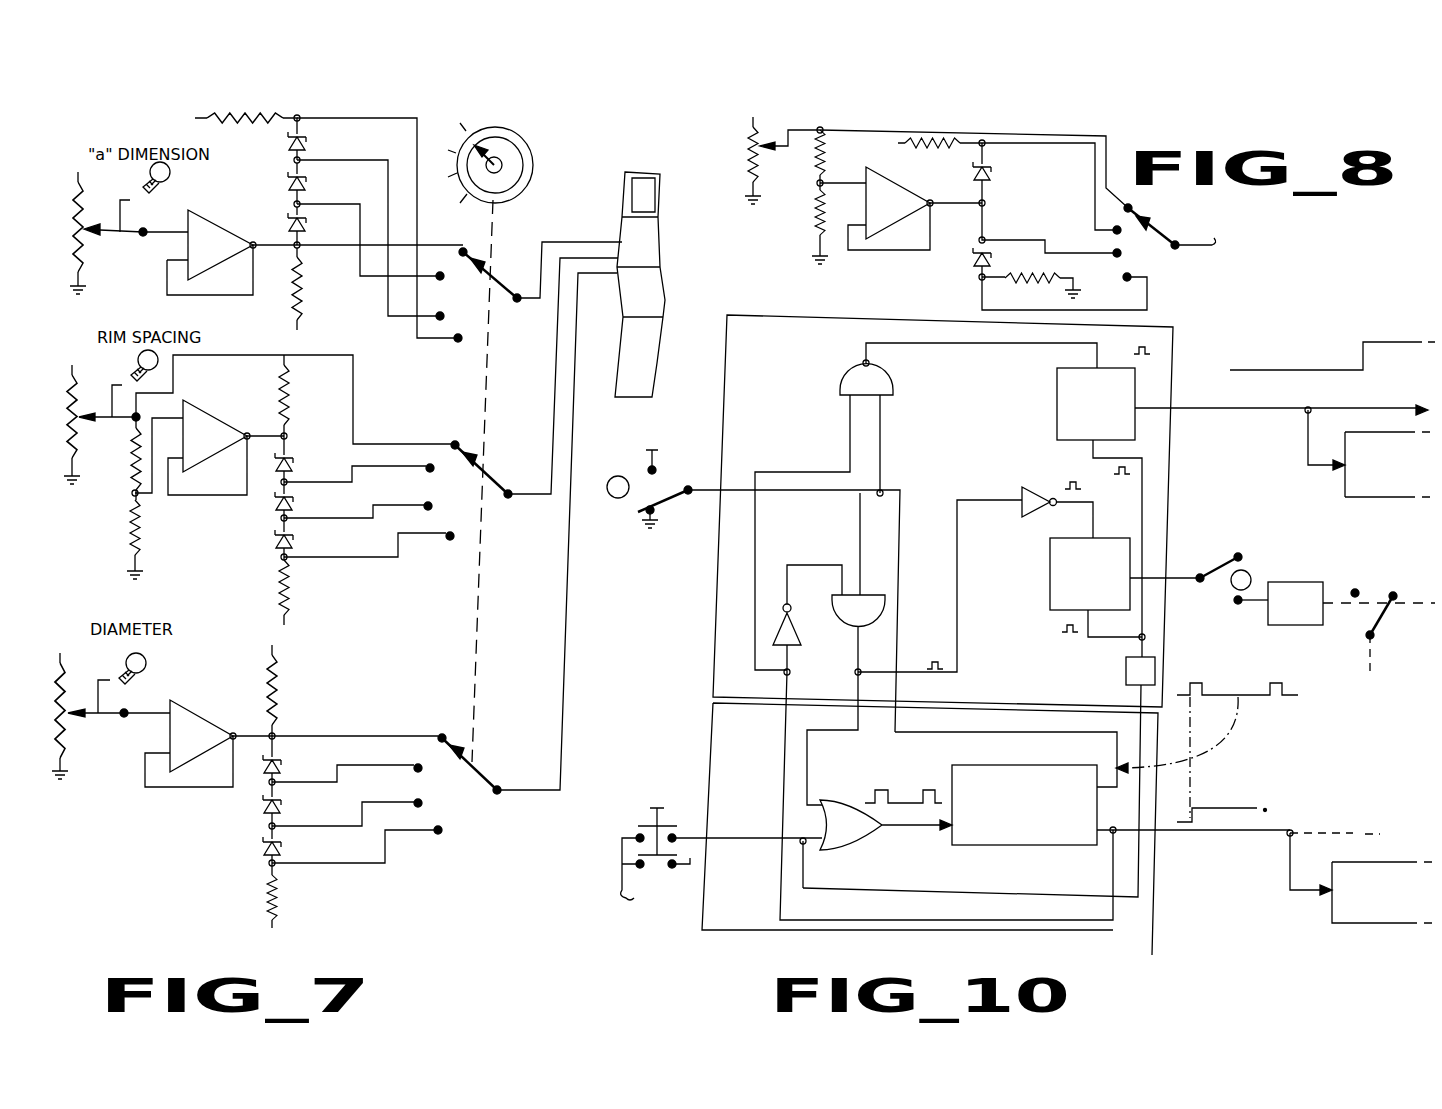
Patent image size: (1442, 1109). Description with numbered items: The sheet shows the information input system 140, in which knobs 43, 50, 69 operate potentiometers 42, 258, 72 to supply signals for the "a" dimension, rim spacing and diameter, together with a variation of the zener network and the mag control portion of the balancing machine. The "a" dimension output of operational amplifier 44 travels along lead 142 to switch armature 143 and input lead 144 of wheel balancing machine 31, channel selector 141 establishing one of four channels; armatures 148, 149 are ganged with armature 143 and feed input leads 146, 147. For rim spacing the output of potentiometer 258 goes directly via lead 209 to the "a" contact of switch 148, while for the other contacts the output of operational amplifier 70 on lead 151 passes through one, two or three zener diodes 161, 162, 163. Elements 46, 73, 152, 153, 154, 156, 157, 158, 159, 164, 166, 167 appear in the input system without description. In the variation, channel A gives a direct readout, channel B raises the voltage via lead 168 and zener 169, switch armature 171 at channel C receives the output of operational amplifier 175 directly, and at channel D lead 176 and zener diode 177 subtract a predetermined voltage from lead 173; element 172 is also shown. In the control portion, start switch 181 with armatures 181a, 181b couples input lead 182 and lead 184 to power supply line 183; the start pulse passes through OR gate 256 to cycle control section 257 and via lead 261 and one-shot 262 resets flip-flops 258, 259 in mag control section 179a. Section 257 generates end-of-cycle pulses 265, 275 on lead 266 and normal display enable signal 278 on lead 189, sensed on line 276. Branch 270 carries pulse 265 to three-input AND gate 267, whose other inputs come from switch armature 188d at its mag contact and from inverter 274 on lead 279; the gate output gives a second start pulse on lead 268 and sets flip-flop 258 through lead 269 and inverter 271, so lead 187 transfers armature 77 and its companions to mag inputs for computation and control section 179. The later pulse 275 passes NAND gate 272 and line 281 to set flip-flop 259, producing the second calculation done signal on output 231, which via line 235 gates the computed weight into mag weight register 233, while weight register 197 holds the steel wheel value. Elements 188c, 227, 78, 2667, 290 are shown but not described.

In FIG. 7, the potentiometer 42 is at (94, 252).
In FIG. 7, the knob 43 is at (171, 174).
In FIG. 7, the operational amplifier 44 is at (215, 230).
In FIG. 7, the amplifier output line 46 is at (256, 245).
In FIG. 7, the knob 50 is at (160, 363).
In FIG. 7, the operational amplifier 70 is at (212, 428).
In FIG. 7, the first flip-flop 258 is at (66, 453).
In FIG. 10, the first flip-flop 258 is at (1050, 580).
In FIG. 7, the lead 209 is at (353, 378).
In FIG. 7, the knob 69 is at (148, 661).
In FIG. 7, the operational amplifier 73 is at (200, 726).
In FIG. 7, the potentiometer 72 is at (42, 792).
In FIG. 7, the information input system 140 is at (135, 832).
In FIG. 7, the channel selector 141 is at (540, 163).
In FIG. 7, the lead 142 is at (323, 252).
In FIG. 7, the switch armature 143 is at (497, 278).
In FIG. 7, the input lead 144 is at (585, 241).
In FIG. 7, the input lead 146 is at (554, 382).
In FIG. 7, the input lead 147 is at (564, 690).
In FIG. 7, the switch armature 148 is at (486, 477).
In FIG. 7, the switch armature 149 is at (482, 770).
In FIG. 7, the lead 151 is at (288, 434).
In FIG. 7, the resistor 152 is at (280, 735).
In FIG. 7, the connecting lines 153 is at (413, 325).
In FIG. 7, the connecting lines 154 is at (398, 560).
In FIG. 7, the connecting lines 156 is at (322, 866).
In FIG. 7, the zener diode 157 is at (308, 225).
In FIG. 7, the zener diode 158 is at (308, 184).
In FIG. 7, the zener diode 159 is at (308, 142).
In FIG. 7, the zener diode 161 is at (292, 463).
In FIG. 7, the zener diode 162 is at (293, 502).
In FIG. 7, the zener diode 163 is at (294, 540).
In FIG. 7, the zener diode 164 is at (283, 766).
In FIG. 7, the zener diode 166 is at (284, 806).
In FIG. 7, the zener diode 167 is at (284, 847).
In FIG. 7, the wheel balancing machine 31 is at (652, 290).
In FIG. 8, the lead 173 is at (947, 200).
In FIG. 8, the operational amplifier 175 is at (905, 218).
In FIG. 8, the zener diode 169 is at (994, 176).
In FIG. 8, the lead 168 is at (1092, 183).
In FIG. 8, the connecting line 172 is at (1134, 202).
In FIG. 8, the switch armature 171 is at (1160, 232).
In FIG. 8, the lead 176 is at (1090, 312).
In FIG. 8, the zener diode 177 is at (970, 260).
In FIG. 10, the mag control section 179a is at (797, 361).
In FIG. 10, the computation and control section 179 is at (1117, 966).
In FIG. 10, the NAND gate 272 is at (888, 383).
In FIG. 10, the line 281 is at (1012, 350).
In FIG. 10, the second flip-flop 259 is at (1057, 410).
In FIG. 10, the line 276 is at (810, 440).
In FIG. 10, the lead 279 is at (830, 536).
In FIG. 10, the lead 266 is at (884, 474).
In FIG. 10, the three input AND gate 267 is at (874, 603).
In FIG. 10, the inverter 271 is at (1025, 518).
In FIG. 10, the branch 270 is at (899, 660).
In FIG. 10, the lead 269 is at (988, 618).
In FIG. 10, the inverter 274 is at (824, 630).
In FIG. 10, the one-shot 262 is at (1125, 678).
In FIG. 10, the switch armature 188d is at (688, 507).
In FIG. 10, the lead 187 is at (1175, 576).
In FIG. 10, the mode switch C 188c is at (1205, 586).
In FIG. 10, the control unit 227 is at (1257, 600).
In FIG. 10, the switch armature 77 is at (1380, 598).
In FIG. 10, the switch arm 78 is at (1374, 660).
In FIG. 10, the end cycle pulse 265 is at (1178, 665).
In FIG. 10, the end-of-cycle pulse 275 is at (1258, 672).
In FIG. 10, the lead 231 is at (1224, 383).
In FIG. 10, the line 235 is at (1306, 455).
In FIG. 10, the mag weight register 233 is at (1345, 485).
In FIG. 10, the start switch 181 is at (655, 798).
In FIG. 10, the armature 181a is at (673, 828).
In FIG. 10, the armature 181b is at (662, 862).
In FIG. 10, the input lead 182 is at (735, 838).
In FIG. 10, the power supply line 183 is at (622, 859).
In FIG. 10, the lead 184 is at (688, 852).
In FIG. 10, the OR gate 256 is at (858, 838).
In FIG. 10, the cycle control section 257 is at (1012, 835).
In FIG. 10, the lead 261 is at (965, 875).
In FIG. 10, the lead 268 is at (808, 731).
In FIG. 10, the end cycle line 2667 is at (985, 720).
In FIG. 10, the normal display enable signal 278 is at (1222, 808).
In FIG. 10, the lead 189 is at (1238, 838).
In FIG. 10, the connecting line 290 is at (1286, 880).
In FIG. 10, the weight register 197 is at (1366, 925).